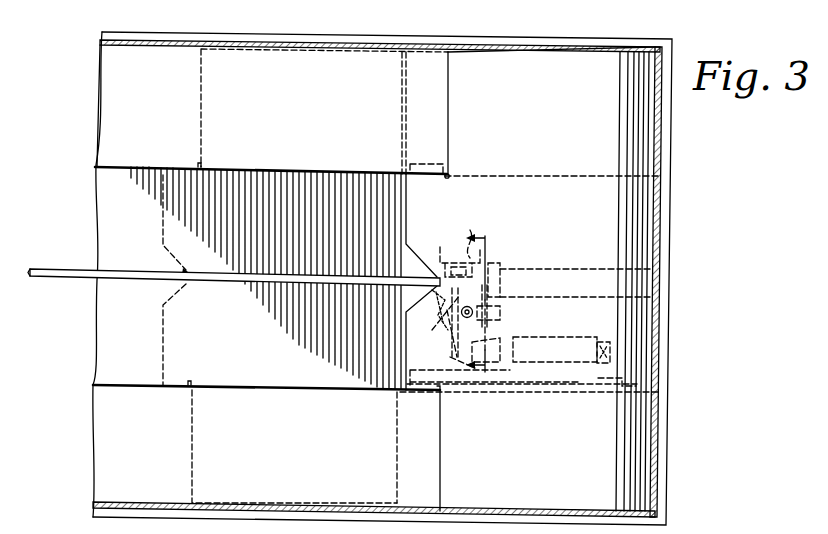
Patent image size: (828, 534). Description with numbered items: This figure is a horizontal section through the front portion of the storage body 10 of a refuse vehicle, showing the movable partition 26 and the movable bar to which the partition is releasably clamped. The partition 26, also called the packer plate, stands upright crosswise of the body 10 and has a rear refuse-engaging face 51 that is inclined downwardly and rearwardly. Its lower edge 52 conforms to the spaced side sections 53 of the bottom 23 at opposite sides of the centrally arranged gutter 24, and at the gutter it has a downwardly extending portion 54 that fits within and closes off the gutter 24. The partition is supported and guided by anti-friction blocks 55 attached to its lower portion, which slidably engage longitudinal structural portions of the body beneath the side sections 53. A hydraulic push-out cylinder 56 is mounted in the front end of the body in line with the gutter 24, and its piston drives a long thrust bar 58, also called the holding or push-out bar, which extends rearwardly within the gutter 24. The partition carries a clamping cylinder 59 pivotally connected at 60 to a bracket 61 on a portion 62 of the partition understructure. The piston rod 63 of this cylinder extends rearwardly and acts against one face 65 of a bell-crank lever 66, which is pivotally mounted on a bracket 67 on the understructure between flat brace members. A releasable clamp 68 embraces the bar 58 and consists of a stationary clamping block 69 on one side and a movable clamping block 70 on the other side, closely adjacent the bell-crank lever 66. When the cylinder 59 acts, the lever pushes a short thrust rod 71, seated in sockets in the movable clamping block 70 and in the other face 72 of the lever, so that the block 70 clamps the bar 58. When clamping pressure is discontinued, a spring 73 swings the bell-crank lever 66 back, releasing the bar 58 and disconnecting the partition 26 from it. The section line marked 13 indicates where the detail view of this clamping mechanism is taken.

The storage body 10 is at (318, 40).
The rear refuse-engaging face 51 is at (552, 66).
The lower edge 52 is at (458, 100).
The bottom 23 is at (158, 103).
The anti-friction blocks 55 is at (250, 152).
The downwardly extending portion 54 is at (415, 210).
The side sections 53 is at (239, 396).
The gutter 24 is at (113, 308).
The thrust bar 58 is at (127, 268).
The movable partition 26 is at (566, 213).
The hydraulic cylinder 56 is at (573, 270).
The releasable clamp 68 is at (450, 258).
The stationary clamping block 69 is at (476, 233).
The front end 13 is at (493, 303).
The thrust rod 71 is at (483, 298).
The bracket 67 is at (483, 320).
The one face 65 is at (480, 323).
The movable clamping block 70 is at (442, 308).
The spring 73 is at (437, 328).
The other face 72 is at (495, 347).
The hydraulic cylinder 59 is at (558, 362).
The pivotal connection 60 is at (603, 338).
The bracket 61 is at (613, 363).
The bell-crank lever 66 is at (458, 358).
The portion of the understructure 62 is at (480, 358).
The piston rod 63 is at (510, 355).